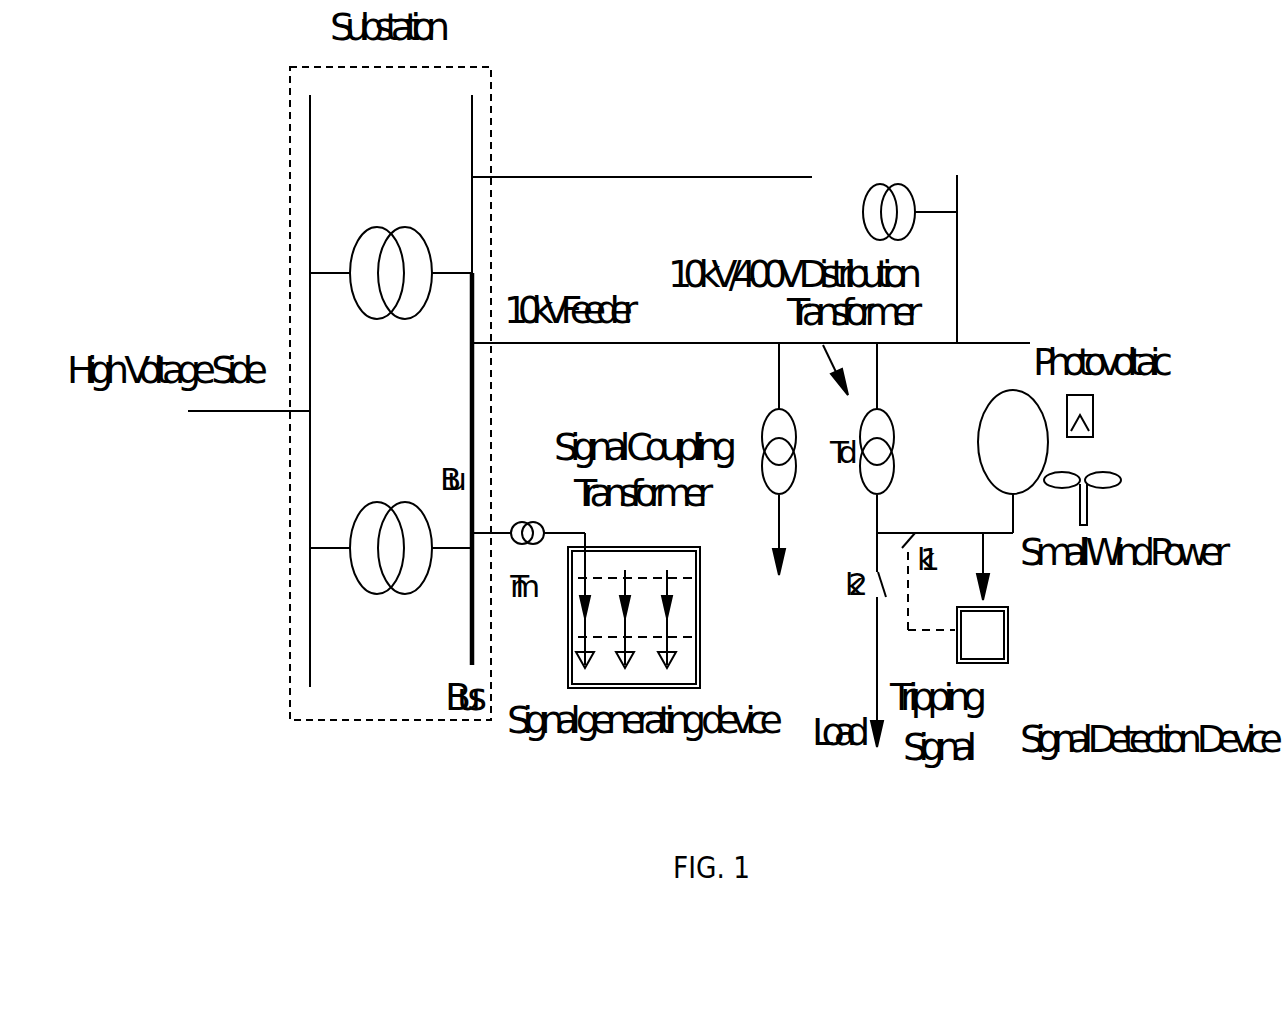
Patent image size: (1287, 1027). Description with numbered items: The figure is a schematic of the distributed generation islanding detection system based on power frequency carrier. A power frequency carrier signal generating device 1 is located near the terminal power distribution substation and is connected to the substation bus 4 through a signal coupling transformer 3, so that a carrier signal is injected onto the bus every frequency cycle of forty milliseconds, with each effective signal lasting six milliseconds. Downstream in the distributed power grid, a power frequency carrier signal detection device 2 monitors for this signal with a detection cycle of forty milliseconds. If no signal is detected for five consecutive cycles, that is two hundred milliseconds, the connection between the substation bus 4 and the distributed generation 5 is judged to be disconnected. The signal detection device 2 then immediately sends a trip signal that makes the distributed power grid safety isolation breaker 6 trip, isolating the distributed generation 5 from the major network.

The power frequency carrier signal generating device 1 is at (590, 677).
The power frequency carrier signal detection device 2 is at (1024, 662).
The signal coupling transformer 3 is at (536, 482).
The substation bus 4 is at (450, 613).
The distributed generation 5 is at (1023, 347).
The distributed power grid safety isolation breaker 6 is at (917, 499).